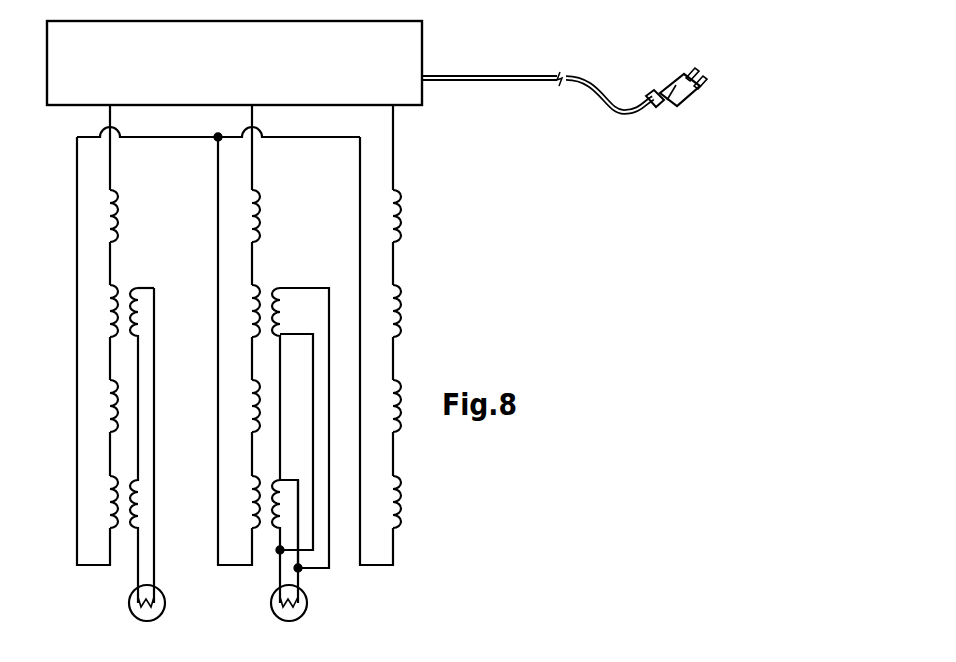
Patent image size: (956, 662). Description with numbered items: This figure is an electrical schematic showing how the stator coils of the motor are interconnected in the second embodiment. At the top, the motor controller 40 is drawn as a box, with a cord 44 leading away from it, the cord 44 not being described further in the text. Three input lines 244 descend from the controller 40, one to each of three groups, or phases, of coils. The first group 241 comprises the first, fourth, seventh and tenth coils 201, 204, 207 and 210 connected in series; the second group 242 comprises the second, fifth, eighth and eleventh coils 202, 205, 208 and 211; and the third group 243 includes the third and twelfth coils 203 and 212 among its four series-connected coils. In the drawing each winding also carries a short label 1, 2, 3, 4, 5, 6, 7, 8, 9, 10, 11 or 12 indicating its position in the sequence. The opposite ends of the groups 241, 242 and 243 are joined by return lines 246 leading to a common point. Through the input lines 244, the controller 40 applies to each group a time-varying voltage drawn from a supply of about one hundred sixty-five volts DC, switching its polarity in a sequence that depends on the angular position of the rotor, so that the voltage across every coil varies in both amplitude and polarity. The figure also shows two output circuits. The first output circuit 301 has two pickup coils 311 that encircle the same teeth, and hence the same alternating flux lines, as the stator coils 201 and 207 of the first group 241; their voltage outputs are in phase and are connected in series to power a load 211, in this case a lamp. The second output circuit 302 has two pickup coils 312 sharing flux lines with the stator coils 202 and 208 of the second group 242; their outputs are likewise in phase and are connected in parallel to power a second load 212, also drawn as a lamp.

The motor controller 40 is at (396, 21).
The power cord with plug 44 is at (488, 75).
The input line 244 is at (105, 114).
The line 246 is at (95, 567).
The first group 241 is at (120, 176).
The second group 242 is at (275, 176).
The third group 243 is at (410, 170).
The tenth coil 210 is at (119, 214).
The eleventh coil 211 is at (261, 212).
The twelfth coil 212 is at (305, 590).
The seventh coil 207 is at (111, 286).
The eighth coil 208 is at (253, 283).
The fourth coil 204 is at (112, 384).
The fifth coil 205 is at (254, 374).
The first coil 201 is at (112, 472).
The second coil 202 is at (253, 472).
The third coil 203 is at (394, 473).
The pickup coil 311 is at (132, 296).
The pickup coil 312 is at (274, 293).
The first output circuit 301 is at (134, 626).
The second output circuit 302 is at (276, 626).
The winding 10 is at (137, 216).
The winding 11 is at (244, 410).
The winding 12 is at (381, 216).
The winding 7 is at (102, 311).
The winding 8 is at (245, 311).
The winding 9 is at (387, 311).
The winding 4 is at (103, 406).
The winding 5 is at (245, 406).
The winding 6 is at (387, 406).
The winding 1 is at (103, 502).
The winding 2 is at (245, 502).
The winding 3 is at (387, 502).